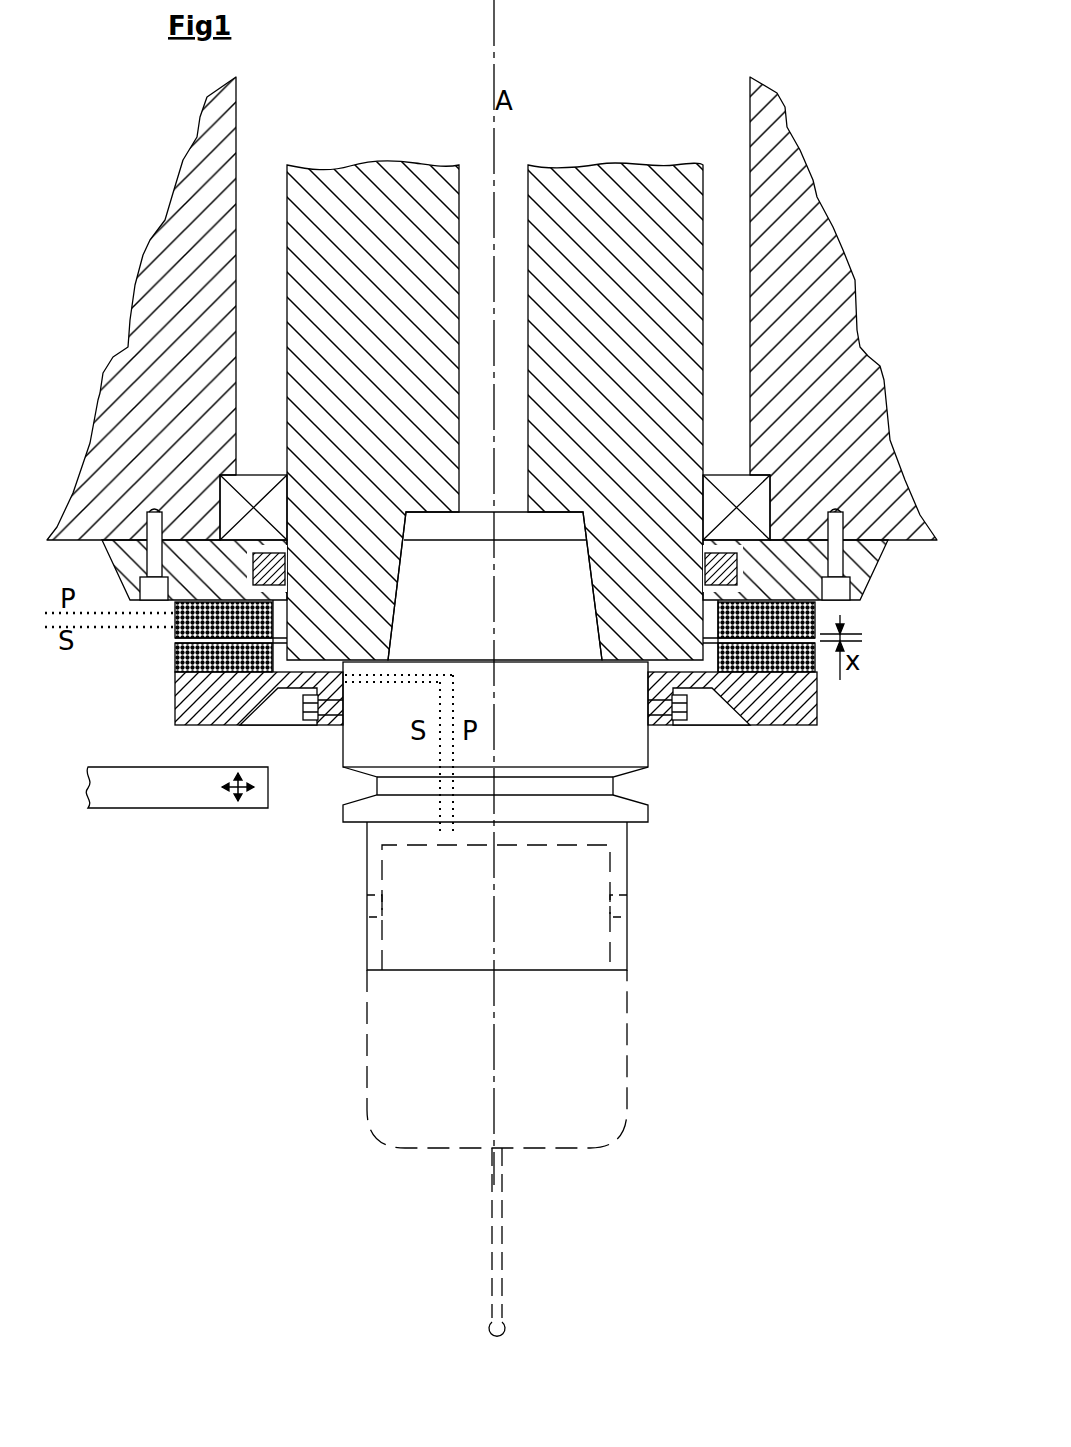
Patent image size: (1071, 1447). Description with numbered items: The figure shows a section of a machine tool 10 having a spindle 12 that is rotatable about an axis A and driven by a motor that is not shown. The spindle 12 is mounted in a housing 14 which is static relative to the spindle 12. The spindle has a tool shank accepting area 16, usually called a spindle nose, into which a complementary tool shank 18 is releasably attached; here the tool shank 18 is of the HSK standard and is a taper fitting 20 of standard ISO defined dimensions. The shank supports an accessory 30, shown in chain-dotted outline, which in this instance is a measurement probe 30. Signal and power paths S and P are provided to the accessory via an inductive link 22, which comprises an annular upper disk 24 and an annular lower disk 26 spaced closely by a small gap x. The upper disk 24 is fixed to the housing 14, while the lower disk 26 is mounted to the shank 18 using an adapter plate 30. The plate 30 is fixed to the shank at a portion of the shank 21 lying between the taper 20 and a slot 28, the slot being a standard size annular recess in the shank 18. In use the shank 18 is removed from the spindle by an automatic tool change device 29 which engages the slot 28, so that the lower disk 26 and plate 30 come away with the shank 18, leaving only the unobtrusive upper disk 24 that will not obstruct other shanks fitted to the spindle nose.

The machine tool 10 is at (825, 113).
The spindle 12 is at (348, 172).
The housing 14 is at (190, 190).
The tool shank accepting area 16 is at (470, 528).
The tool shank 18 is at (692, 779).
The taper fitting 20 is at (495, 586).
The portion of the shank 21 is at (495, 714).
The inductive link 22 is at (172, 641).
The upper disk 24 is at (815, 612).
The lower disk 26 is at (815, 658).
The slot 28 is at (347, 790).
The automatic tool change device 29 is at (152, 792).
The accessory (measurement probe) / adapter plate 30 is at (175, 700).